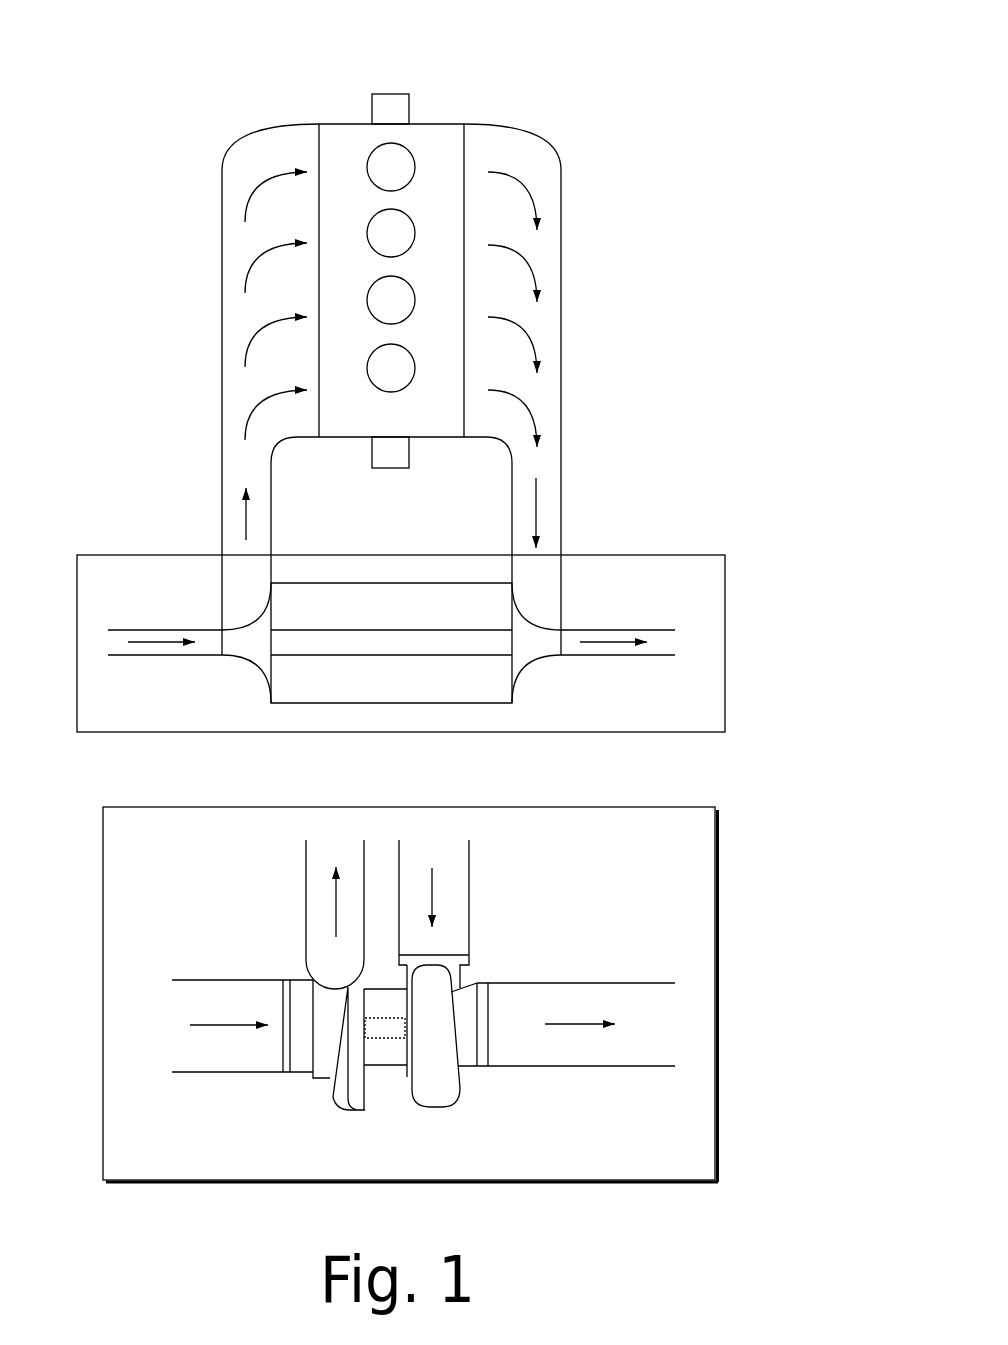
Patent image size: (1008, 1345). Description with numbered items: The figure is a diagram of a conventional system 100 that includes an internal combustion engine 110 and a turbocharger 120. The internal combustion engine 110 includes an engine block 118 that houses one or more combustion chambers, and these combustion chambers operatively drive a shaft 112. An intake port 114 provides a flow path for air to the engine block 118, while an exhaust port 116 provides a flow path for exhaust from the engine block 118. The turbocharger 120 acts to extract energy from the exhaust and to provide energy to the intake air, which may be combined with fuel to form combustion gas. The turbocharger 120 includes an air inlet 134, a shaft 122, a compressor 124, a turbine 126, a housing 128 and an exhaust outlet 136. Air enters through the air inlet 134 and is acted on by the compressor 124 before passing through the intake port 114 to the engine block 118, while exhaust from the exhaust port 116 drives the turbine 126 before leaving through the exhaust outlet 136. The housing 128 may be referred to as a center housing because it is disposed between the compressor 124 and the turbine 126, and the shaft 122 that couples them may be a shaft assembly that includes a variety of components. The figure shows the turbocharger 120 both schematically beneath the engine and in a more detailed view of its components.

The system 100 is at (553, 53).
The internal combustion engine 110 is at (355, 124).
The shaft 112 is at (390, 94).
The intake port 114 is at (240, 142).
The exhaust port 116 is at (555, 155).
The engine block 118 is at (413, 429).
The turbocharger 120 is at (618, 555).
The shaft 122 is at (392, 657).
The compressor 124 is at (250, 665).
The turbine 126 is at (533, 663).
The housing 128 is at (416, 616).
The air inlet 134 is at (185, 630).
The exhaust outlet 136 is at (620, 630).